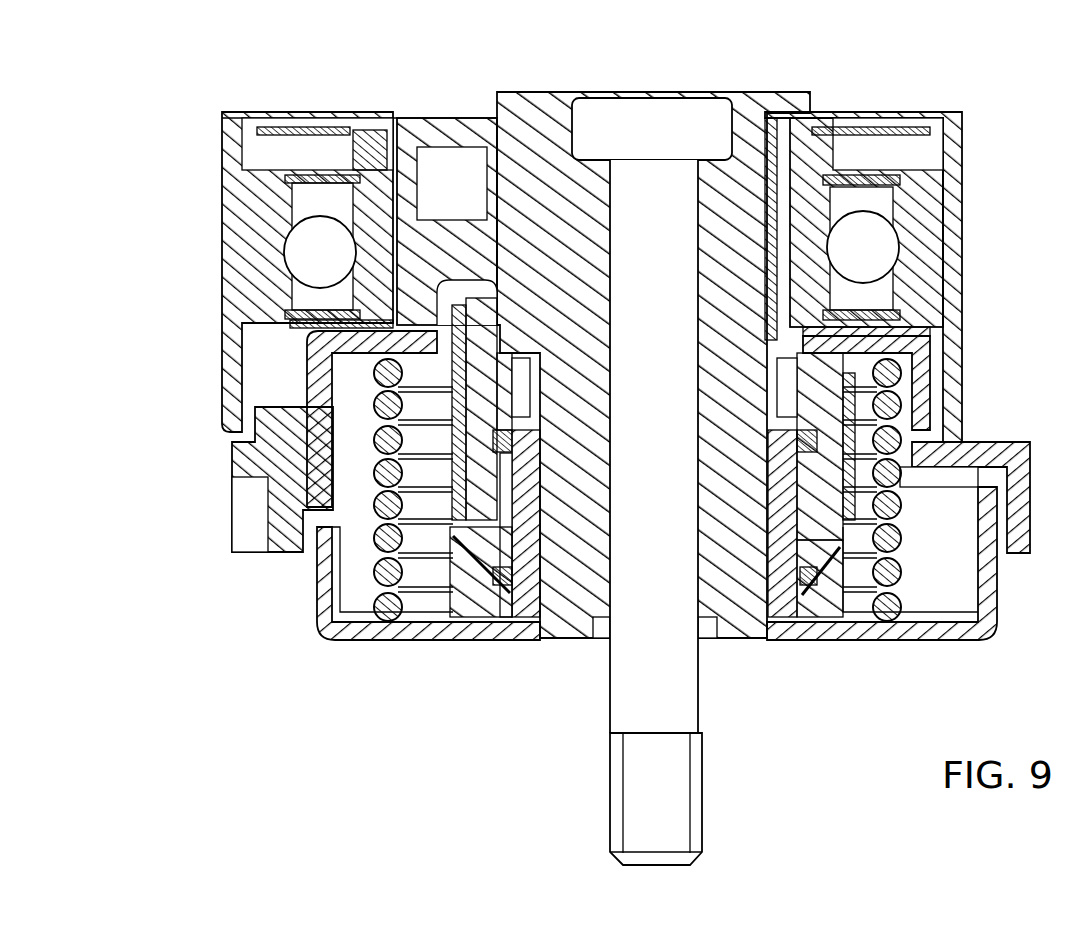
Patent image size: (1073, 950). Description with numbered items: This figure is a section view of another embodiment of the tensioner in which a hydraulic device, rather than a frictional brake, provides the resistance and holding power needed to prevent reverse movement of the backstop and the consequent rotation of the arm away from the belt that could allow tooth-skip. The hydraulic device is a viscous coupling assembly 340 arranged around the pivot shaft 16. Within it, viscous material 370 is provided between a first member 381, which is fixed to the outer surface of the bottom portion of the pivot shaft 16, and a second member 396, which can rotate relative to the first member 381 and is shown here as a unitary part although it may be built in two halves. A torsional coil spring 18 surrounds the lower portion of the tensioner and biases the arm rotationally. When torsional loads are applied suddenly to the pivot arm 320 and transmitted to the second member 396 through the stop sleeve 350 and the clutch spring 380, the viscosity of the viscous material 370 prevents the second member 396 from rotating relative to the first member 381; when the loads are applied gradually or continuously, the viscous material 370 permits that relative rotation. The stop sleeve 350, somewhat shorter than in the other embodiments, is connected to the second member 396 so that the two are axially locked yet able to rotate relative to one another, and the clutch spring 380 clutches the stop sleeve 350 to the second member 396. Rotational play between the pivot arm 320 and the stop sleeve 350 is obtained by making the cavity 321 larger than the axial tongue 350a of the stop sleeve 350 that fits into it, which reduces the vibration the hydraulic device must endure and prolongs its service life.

The pivot shaft 16 is at (570, 612).
The torsional coil spring 18 is at (362, 573).
The pivot arm 320 is at (990, 457).
The cavity 321 is at (452, 300).
The coupling assembly 340 is at (434, 578).
The stop sleeve 350 is at (903, 328).
The axial tongue 350a is at (478, 310).
The viscous material 370 is at (803, 537).
The clutch spring 380 is at (453, 417).
The first member 381 is at (782, 493).
The second member 396 is at (815, 608).